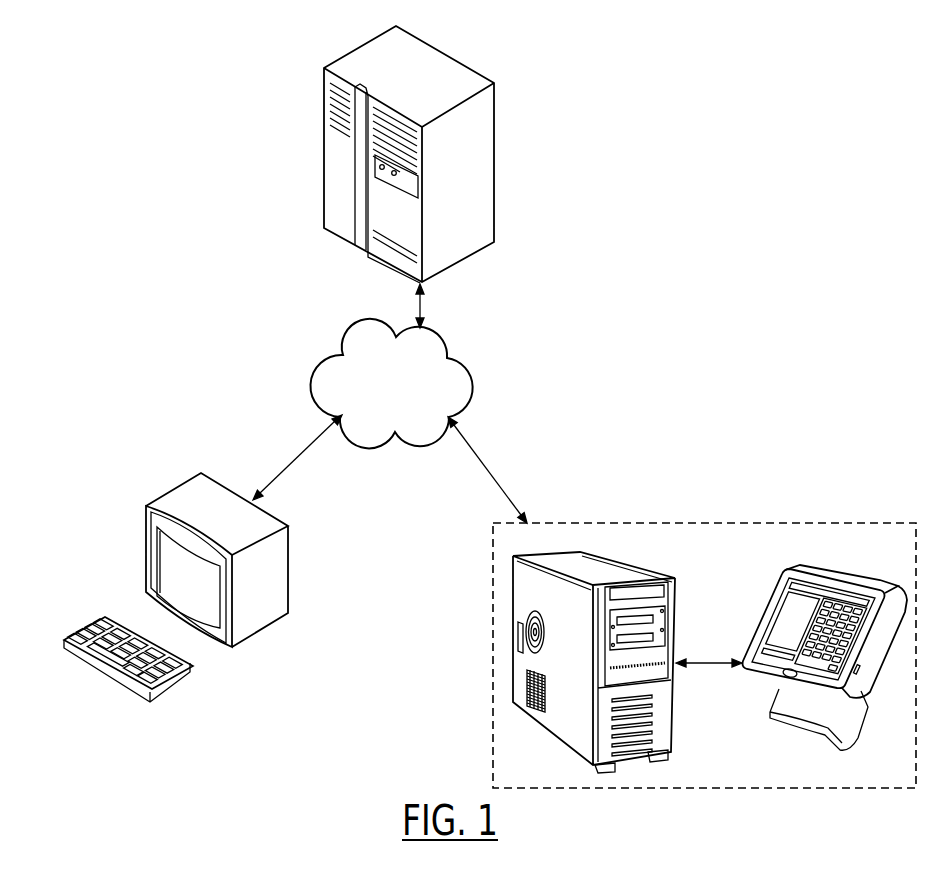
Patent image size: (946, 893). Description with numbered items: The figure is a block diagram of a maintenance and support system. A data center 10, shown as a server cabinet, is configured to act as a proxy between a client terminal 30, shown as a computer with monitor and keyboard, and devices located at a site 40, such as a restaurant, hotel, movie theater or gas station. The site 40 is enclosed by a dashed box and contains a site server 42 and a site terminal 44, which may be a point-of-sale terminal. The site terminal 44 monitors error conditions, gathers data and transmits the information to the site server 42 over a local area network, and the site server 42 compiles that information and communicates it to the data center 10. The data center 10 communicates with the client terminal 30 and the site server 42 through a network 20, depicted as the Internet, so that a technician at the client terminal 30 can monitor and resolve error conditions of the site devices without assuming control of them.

The data center 10 is at (347, 55).
The network 20 is at (348, 341).
The client terminal 30 is at (173, 490).
The site 40 is at (645, 522).
The site server 42 is at (672, 740).
The site terminal 44 is at (860, 731).